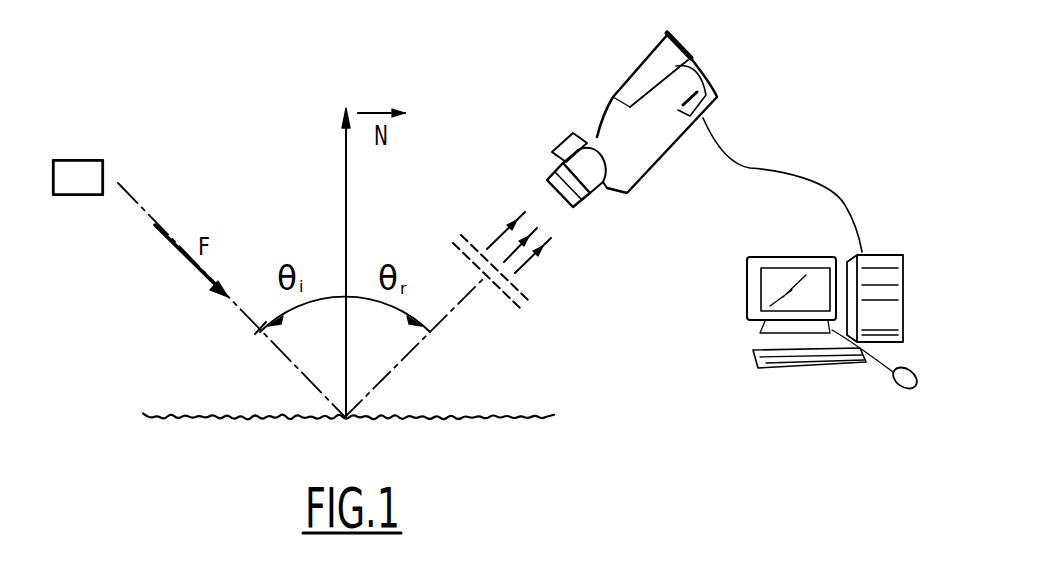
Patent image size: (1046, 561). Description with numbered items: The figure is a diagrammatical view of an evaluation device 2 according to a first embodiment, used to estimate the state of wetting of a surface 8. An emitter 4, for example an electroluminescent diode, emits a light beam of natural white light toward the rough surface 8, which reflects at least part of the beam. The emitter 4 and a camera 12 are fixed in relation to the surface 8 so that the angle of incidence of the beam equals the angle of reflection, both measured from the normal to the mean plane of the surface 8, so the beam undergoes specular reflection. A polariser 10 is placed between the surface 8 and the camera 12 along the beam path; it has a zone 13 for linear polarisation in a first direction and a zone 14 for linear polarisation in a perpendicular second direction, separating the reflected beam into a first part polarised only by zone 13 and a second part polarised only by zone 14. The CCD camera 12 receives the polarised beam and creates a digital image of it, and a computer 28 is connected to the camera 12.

The evaluation device 2 is at (83, 140).
The emitter 4 is at (84, 181).
The surface 8 is at (163, 420).
The polariser 10 is at (532, 307).
The camera 12 is at (638, 66).
The zone for linear polarisation in a first direction 13 is at (500, 304).
The zone for linear polarisation in a second direction 14 is at (458, 259).
The computer 28 is at (882, 251).